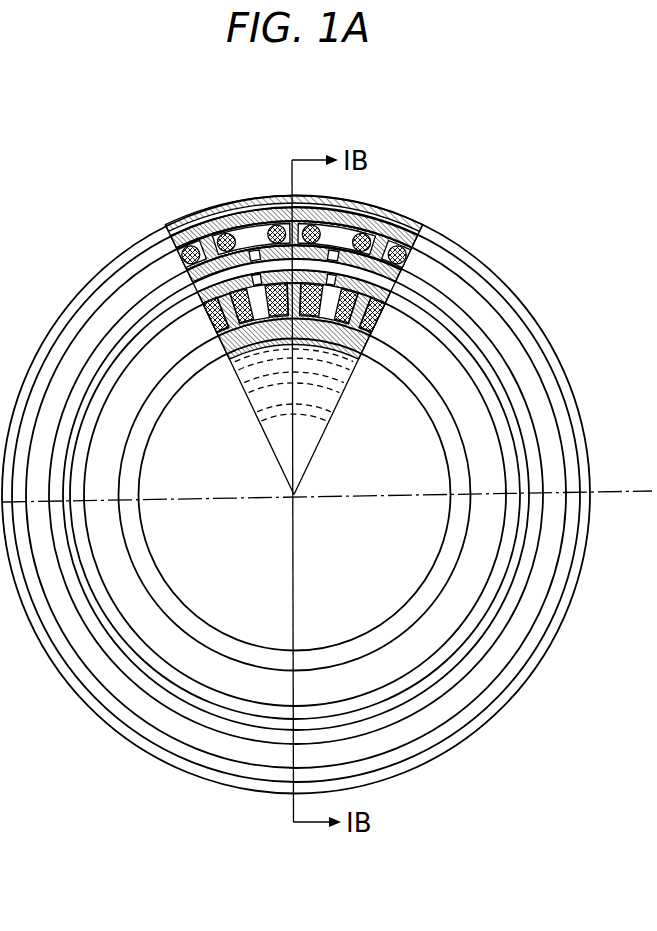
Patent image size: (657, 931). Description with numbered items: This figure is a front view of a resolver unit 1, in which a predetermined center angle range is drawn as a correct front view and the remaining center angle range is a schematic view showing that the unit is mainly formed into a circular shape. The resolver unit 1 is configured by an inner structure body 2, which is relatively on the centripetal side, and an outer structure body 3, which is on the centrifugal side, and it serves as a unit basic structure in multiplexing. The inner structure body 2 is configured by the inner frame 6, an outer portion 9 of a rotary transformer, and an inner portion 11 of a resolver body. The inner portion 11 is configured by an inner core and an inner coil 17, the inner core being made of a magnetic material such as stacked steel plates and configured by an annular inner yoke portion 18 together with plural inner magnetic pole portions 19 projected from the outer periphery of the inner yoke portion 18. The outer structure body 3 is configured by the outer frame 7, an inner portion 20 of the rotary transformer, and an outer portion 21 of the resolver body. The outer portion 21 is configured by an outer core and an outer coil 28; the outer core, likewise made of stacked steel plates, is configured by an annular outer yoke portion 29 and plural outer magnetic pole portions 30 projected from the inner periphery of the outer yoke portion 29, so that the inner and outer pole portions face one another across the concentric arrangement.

The resolver unit 1 is at (438, 193).
The inner structure body 2 is at (52, 756).
The outer structure body 3 is at (513, 763).
The inner frame 6 is at (296, 501).
The outer frame 7 is at (308, 536).
The outer portion of rotary transformer 9 is at (296, 527).
The inner portion of resolver body 11 is at (292, 549).
The inner coil 17 is at (204, 292).
The inner yoke portion 18 is at (214, 318).
The inner magnetic pole portions 19 is at (190, 246).
The inner portion of rotary transformer 20 is at (333, 569).
The outer portion of resolver body 21 is at (343, 594).
The outer coil 28 is at (268, 197).
The outer yoke portion 29 is at (254, 207).
The outer magnetic pole portions 30 is at (212, 224).